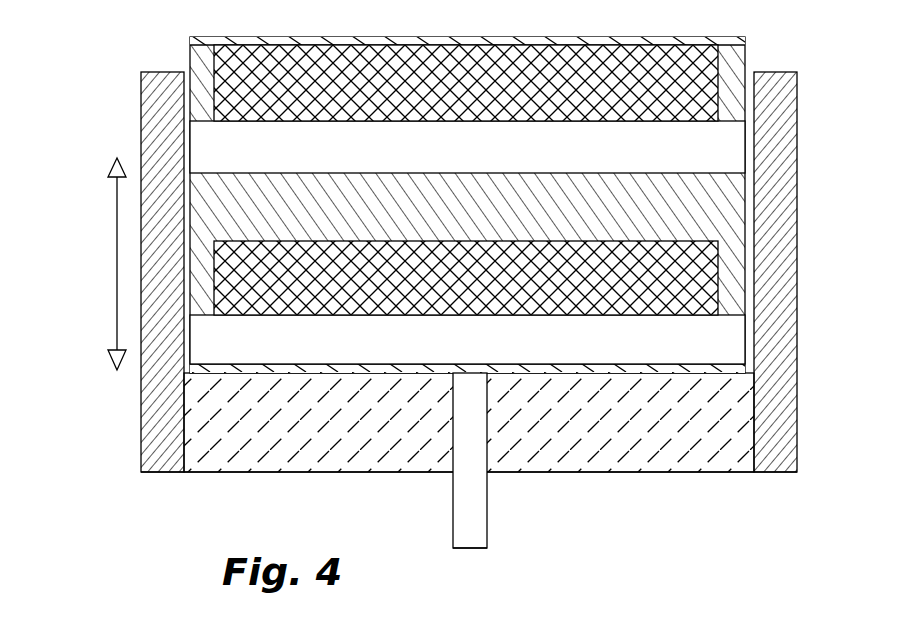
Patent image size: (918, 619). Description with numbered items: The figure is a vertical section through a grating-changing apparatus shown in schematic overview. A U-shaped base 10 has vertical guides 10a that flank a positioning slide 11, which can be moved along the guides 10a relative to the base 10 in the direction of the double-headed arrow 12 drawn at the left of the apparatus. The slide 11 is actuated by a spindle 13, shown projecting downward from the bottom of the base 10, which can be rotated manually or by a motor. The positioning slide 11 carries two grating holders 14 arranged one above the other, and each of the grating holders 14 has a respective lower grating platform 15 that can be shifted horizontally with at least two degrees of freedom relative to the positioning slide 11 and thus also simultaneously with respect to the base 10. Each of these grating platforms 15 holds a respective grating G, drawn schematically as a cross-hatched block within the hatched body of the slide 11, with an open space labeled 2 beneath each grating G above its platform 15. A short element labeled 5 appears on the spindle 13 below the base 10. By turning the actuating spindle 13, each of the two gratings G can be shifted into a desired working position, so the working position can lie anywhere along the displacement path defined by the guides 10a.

The gap / spacing between electrode and frame 2 is at (467, 242).
The contact pin 5 is at (485, 460).
The base 10 is at (190, 485).
The vertical guides 10a is at (153, 400).
The positioning slide 11 is at (725, 207).
The arrow 12 is at (112, 253).
The spindle 13 is at (472, 538).
The grating holders 14 is at (479, 244).
The grating platform 15 is at (521, 244).
The grating G is at (466, 180).